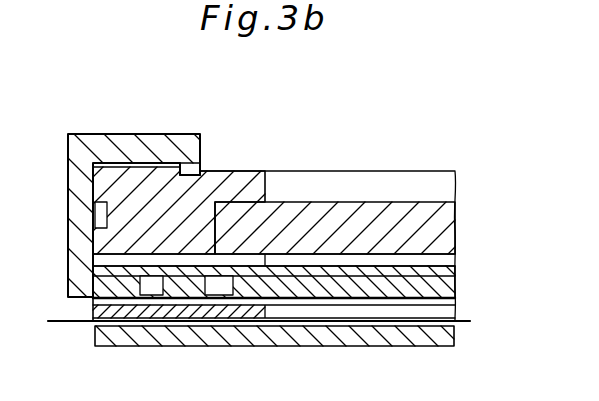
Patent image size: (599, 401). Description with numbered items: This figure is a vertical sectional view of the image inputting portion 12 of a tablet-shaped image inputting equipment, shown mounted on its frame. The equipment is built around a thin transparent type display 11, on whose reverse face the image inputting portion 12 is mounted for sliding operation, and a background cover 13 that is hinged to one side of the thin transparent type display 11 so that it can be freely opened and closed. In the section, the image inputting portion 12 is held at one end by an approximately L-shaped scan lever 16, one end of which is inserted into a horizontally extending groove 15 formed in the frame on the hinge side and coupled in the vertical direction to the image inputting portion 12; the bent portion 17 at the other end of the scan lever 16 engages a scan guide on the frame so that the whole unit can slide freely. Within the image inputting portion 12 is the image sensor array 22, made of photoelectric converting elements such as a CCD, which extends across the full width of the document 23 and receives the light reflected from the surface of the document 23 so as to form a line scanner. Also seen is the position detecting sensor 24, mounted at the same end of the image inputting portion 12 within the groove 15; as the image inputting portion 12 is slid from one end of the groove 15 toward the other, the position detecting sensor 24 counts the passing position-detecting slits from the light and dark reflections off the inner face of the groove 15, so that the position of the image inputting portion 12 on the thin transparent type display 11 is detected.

The thin transparent type display 11 is at (283, 206).
The image inputting portion 12 is at (100, 285).
The background cover 13 is at (240, 333).
The groove 15 is at (97, 258).
The scan lever 16 is at (80, 203).
The bent portion 17 is at (197, 160).
The image sensor array 22 is at (352, 285).
The document 23 is at (63, 322).
The position detecting sensor 24 is at (155, 288).